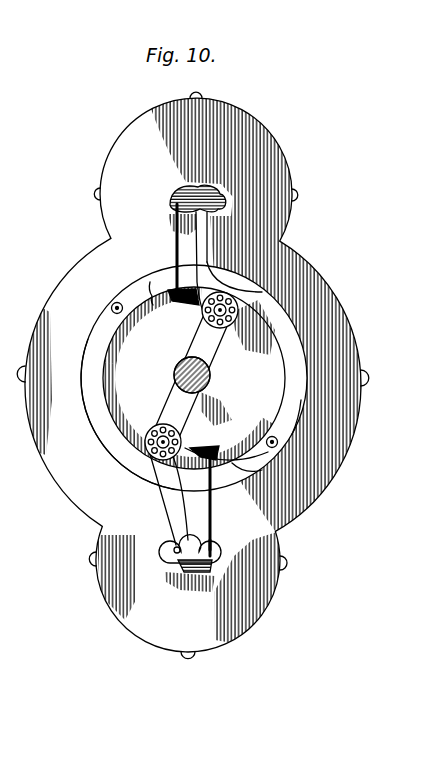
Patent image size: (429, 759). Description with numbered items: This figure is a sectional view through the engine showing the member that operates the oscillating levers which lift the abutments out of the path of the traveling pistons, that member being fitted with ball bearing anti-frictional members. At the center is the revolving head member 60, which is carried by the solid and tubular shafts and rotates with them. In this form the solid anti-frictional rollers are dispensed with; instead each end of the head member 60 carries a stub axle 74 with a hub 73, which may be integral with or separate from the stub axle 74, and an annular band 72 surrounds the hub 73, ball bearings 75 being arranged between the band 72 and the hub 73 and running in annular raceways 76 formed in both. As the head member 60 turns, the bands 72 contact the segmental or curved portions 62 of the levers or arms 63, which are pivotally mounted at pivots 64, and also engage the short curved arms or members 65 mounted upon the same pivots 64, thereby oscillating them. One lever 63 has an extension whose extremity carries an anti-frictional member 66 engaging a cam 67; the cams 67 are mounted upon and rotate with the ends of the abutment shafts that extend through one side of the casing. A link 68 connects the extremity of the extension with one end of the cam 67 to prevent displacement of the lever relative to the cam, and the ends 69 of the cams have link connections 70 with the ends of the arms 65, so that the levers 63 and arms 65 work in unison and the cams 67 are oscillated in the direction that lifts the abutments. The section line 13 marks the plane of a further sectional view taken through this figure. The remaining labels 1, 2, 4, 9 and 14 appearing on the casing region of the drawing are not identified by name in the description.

The first crank arm 1 is at (173, 377).
The second crank arm 2 is at (217, 378).
The casing 4 is at (345, 405).
The guide ring wall 9 is at (306, 442).
The end chamber 13 is at (258, 163).
The lower chamber 14 is at (220, 605).
The revolving head member 60 is at (174, 372).
The segmental or curved portion 62 is at (88, 360).
The lever or arm 63 is at (283, 318).
The pivot 64 is at (115, 303).
The short curved arm 65 is at (330, 497).
The anti-frictional member 66 is at (172, 205).
The cam 67 is at (185, 198).
The link 68 is at (175, 548).
The cam end 69 is at (216, 548).
The link connection 70 is at (175, 240).
The annular band 72 is at (280, 302).
The hub 73 is at (203, 330).
The stub axle 74 is at (148, 433).
The ball bearing 75 is at (262, 282).
The annular raceway 76 is at (153, 488).